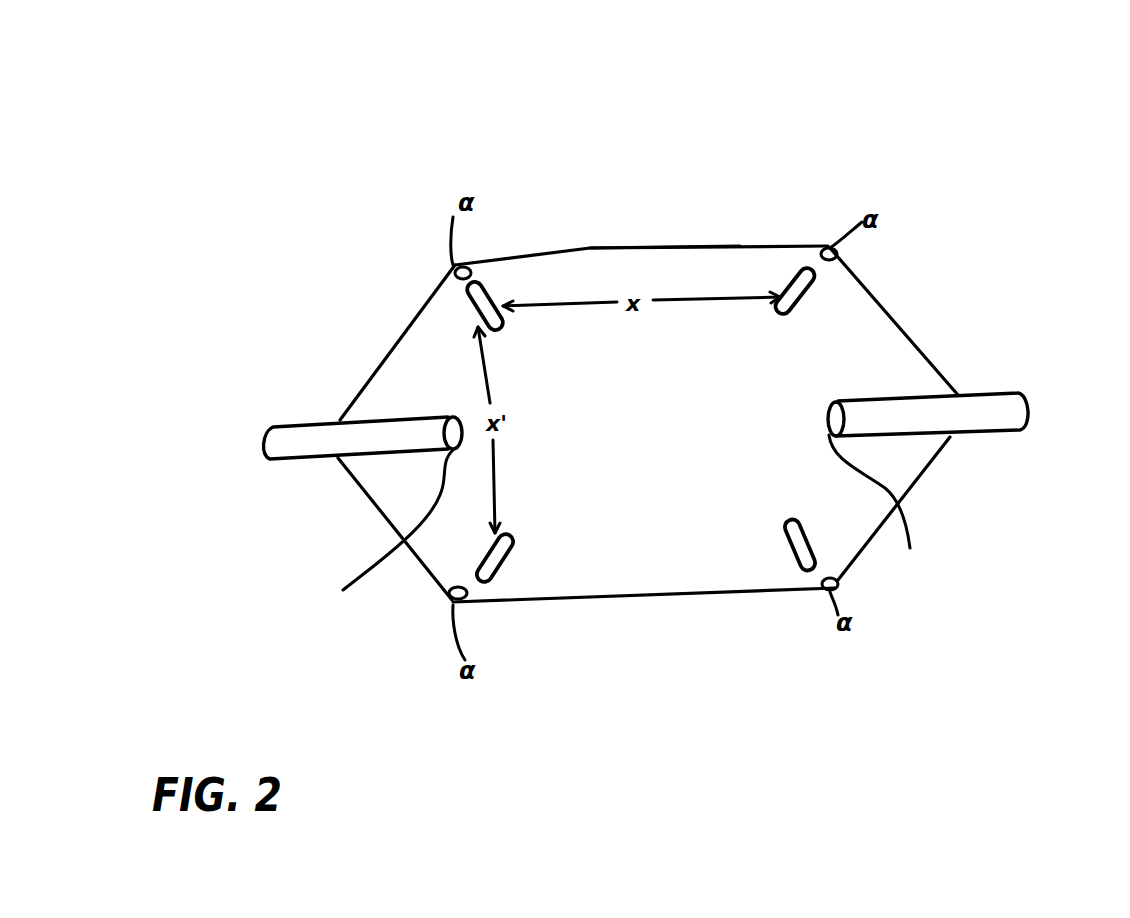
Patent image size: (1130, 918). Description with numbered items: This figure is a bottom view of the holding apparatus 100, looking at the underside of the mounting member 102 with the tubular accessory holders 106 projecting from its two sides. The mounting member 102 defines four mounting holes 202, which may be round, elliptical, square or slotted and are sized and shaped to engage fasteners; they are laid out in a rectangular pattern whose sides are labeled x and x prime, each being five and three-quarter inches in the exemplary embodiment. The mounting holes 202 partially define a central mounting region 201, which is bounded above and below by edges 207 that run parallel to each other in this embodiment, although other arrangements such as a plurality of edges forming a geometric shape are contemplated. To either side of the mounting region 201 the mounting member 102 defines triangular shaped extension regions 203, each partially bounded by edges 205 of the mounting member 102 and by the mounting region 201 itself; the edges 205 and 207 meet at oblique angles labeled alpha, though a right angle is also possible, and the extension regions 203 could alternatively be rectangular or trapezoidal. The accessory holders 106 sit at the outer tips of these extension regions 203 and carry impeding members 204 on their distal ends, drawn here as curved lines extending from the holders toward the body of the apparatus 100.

The holding apparatus 100 is at (947, 140).
The mounting member 102 is at (717, 247).
The accessory holders 106 is at (287, 434).
The mounting region 201 is at (613, 367).
The mounting holes 202 is at (480, 268).
The extension regions 203 is at (443, 347).
The impeding members 204 is at (617, 528).
The edges 205 is at (358, 387).
The edges 207 is at (661, 246).